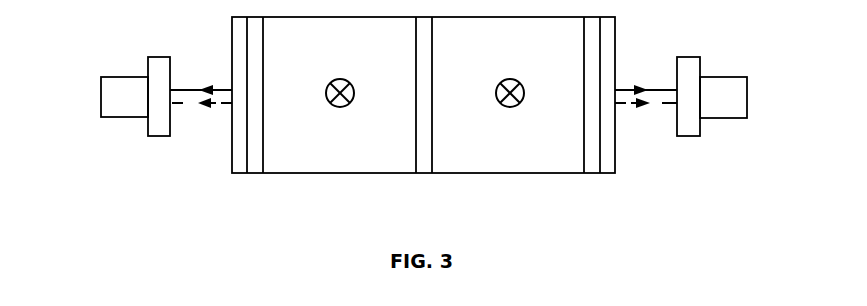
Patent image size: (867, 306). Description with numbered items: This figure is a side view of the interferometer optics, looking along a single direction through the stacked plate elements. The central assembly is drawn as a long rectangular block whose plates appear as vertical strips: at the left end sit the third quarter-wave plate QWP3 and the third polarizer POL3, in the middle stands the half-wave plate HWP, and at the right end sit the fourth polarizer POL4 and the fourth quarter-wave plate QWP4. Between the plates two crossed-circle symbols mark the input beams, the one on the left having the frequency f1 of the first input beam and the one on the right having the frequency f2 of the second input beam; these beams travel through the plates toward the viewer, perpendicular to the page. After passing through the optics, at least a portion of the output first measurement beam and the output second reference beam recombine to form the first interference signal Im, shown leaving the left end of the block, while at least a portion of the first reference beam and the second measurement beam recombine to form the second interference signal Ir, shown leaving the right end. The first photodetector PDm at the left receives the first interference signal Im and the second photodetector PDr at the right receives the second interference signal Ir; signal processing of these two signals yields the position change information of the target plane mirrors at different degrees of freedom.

The first photodetector PDm is at (108, 64).
The second photodetector PDr is at (722, 72).
The third quarter-wave plate QWP3 is at (227, 162).
The fourth quarter-wave plate QWP4 is at (622, 163).
The third polarizer POL3 is at (255, 178).
The fourth polarizer POL4 is at (593, 178).
The half-wave plate HWP is at (424, 178).
The frequency of the first input beam f1 is at (335, 116).
The frequency of the second input beam f2 is at (506, 114).
The first interference signal Im is at (201, 86).
The second interference signal Ir is at (646, 84).